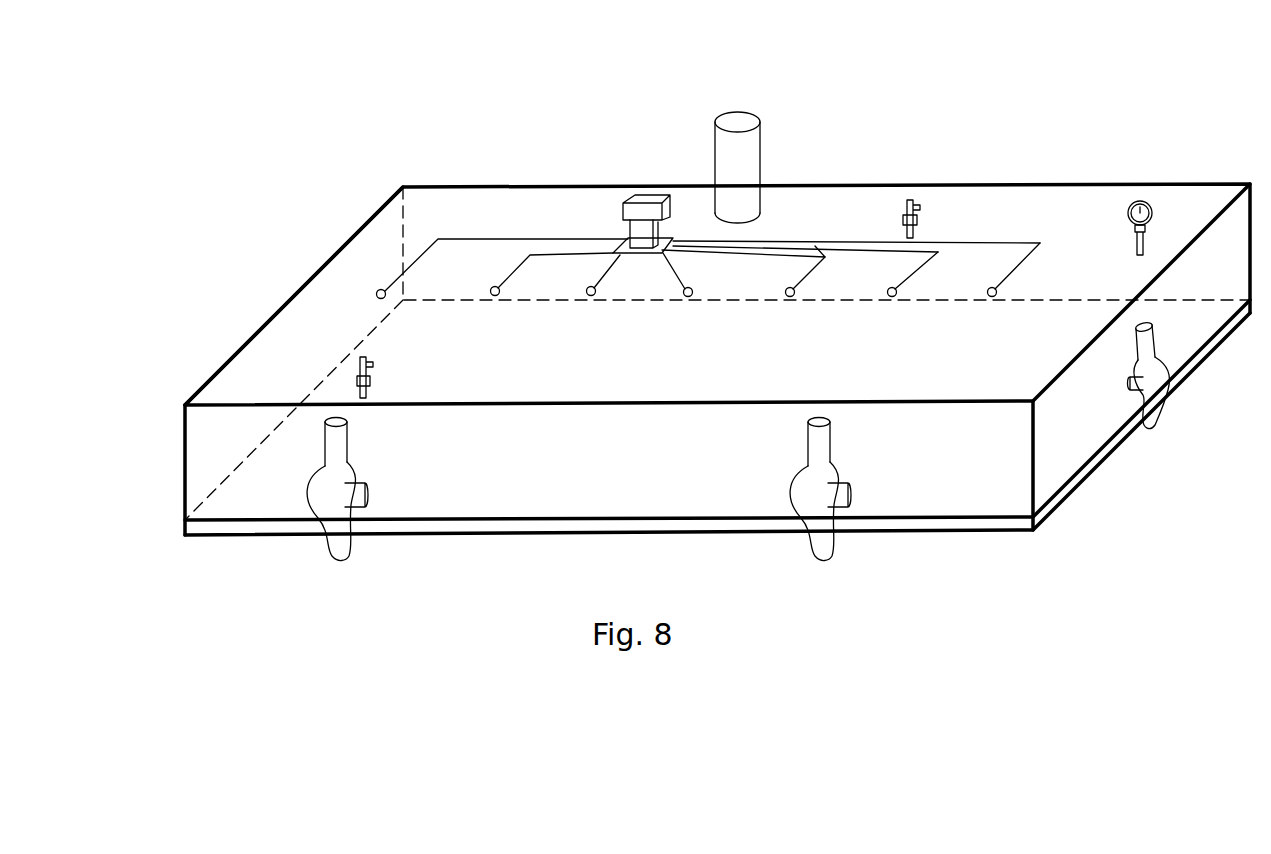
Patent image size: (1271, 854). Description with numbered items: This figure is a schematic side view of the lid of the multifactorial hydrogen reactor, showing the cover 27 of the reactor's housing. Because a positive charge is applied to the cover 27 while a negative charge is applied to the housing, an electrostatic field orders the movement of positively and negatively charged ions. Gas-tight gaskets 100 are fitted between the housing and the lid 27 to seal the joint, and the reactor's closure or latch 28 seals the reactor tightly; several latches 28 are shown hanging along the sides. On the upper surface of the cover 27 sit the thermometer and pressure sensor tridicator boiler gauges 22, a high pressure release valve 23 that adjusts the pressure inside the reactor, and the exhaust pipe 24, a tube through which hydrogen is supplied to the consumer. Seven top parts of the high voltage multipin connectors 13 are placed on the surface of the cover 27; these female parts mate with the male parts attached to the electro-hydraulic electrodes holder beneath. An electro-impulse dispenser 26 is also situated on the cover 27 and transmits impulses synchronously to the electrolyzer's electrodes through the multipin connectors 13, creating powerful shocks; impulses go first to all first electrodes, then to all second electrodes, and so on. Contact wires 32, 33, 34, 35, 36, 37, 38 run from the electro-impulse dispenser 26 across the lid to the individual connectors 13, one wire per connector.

The gas-tight gaskets 100 is at (607, 525).
The lid/cover 27 is at (367, 222).
The high voltage multipin connectors 13 is at (377, 292).
The contact wire 38 is at (415, 260).
The contact wire 37 is at (512, 272).
The contact wire 36 is at (605, 278).
The contact wire 35 is at (678, 268).
The contact wire 34 is at (805, 272).
The contact wire 33 is at (905, 283).
The contact wire 32 is at (1018, 243).
The electro-impulse dispenser 26 is at (645, 196).
The exhaust pipe 24 is at (748, 125).
The high pressure release valve 23 is at (915, 233).
The tridicator boiler gauges 22 is at (1148, 235).
The closure/latch 28 is at (340, 533).